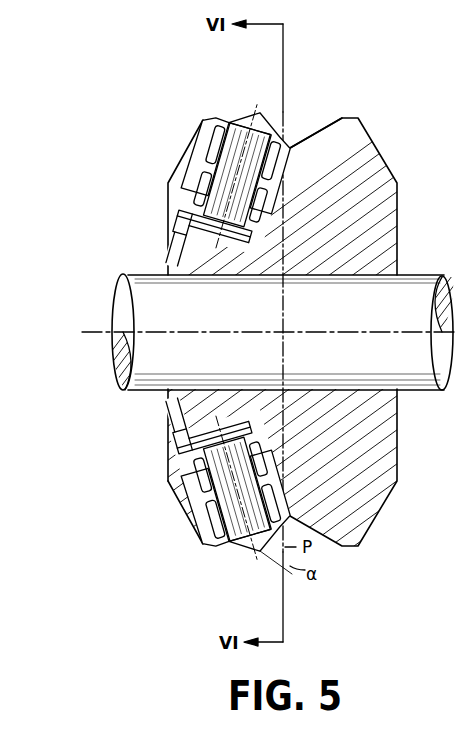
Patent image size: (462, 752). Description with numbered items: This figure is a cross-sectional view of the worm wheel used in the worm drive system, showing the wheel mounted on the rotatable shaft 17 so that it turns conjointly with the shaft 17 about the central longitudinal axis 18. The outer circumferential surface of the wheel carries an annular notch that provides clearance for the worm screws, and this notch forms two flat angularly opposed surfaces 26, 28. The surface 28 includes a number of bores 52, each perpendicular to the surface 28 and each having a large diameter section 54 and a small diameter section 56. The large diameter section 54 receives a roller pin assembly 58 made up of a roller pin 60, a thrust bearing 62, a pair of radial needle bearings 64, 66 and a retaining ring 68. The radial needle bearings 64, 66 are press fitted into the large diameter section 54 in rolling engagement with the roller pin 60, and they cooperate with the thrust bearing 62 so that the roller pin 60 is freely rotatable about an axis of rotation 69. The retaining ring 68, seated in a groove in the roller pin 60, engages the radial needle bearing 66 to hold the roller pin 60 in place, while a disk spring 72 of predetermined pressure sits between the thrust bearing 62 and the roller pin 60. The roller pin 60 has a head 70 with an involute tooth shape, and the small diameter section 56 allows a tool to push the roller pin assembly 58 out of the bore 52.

The shaft 17 is at (115, 302).
The central longitudinal axis 18 is at (100, 335).
The flat angularly opposed surface 26 is at (338, 550).
The flat angularly opposed surface 28 is at (232, 112).
The head 70 is at (257, 110).
The roller pin assembly 58 is at (288, 132).
The bore 52 is at (203, 143).
The roller pin 60 is at (212, 176).
The large diameter section 54 is at (200, 201).
The small diameter section 56 is at (182, 252).
The thrust bearing 62 is at (185, 440).
The disk spring 72 is at (190, 463).
The retaining ring 68 is at (168, 482).
The radial needle bearing 66 is at (190, 497).
The radial needle bearing 64 is at (192, 534).
The axis of rotation 69 is at (272, 556).